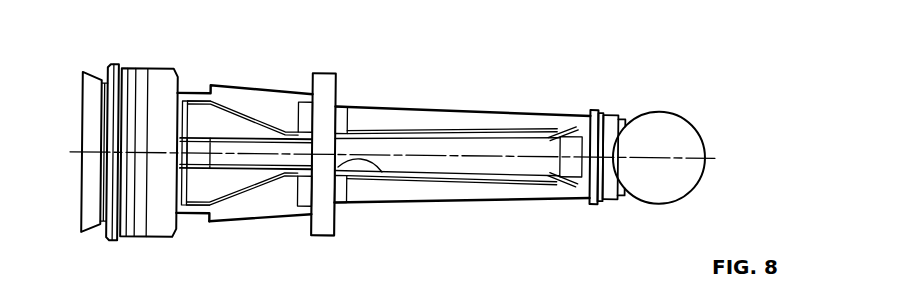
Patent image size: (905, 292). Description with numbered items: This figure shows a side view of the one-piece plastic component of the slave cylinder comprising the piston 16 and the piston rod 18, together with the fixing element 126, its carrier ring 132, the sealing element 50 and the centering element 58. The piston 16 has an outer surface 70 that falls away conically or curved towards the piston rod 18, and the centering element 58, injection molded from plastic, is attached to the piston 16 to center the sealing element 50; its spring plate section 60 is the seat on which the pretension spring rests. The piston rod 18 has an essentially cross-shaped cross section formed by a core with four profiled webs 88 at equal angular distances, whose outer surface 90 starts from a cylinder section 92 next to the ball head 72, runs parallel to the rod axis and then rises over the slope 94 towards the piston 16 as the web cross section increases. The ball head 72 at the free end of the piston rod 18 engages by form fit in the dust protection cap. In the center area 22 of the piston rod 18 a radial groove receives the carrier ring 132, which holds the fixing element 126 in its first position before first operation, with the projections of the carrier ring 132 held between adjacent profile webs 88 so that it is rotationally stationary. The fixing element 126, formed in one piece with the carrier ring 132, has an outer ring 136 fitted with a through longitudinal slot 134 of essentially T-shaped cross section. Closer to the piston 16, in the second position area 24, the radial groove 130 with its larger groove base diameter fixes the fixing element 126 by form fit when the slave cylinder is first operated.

The piston 16 is at (158, 88).
The piston rod 18 is at (605, 132).
The center area 22 is at (349, 213).
The second position area 24 is at (197, 86).
The sealing element 50 is at (120, 232).
The centering element 58 is at (80, 165).
The spring plate section 60 is at (95, 208).
The outer surface 70 is at (157, 222).
The ball head 72 is at (677, 150).
The profiled webs 88 is at (531, 184).
The outer surface 90 is at (500, 108).
The cylinder section 92 is at (605, 192).
The slope 94 is at (252, 86).
The fixing element 126 is at (313, 73).
The radial groove 130 is at (192, 217).
The carrier ring 132 is at (348, 102).
The longitudinal slot 134 is at (382, 172).
The outer ring 136 is at (323, 224).